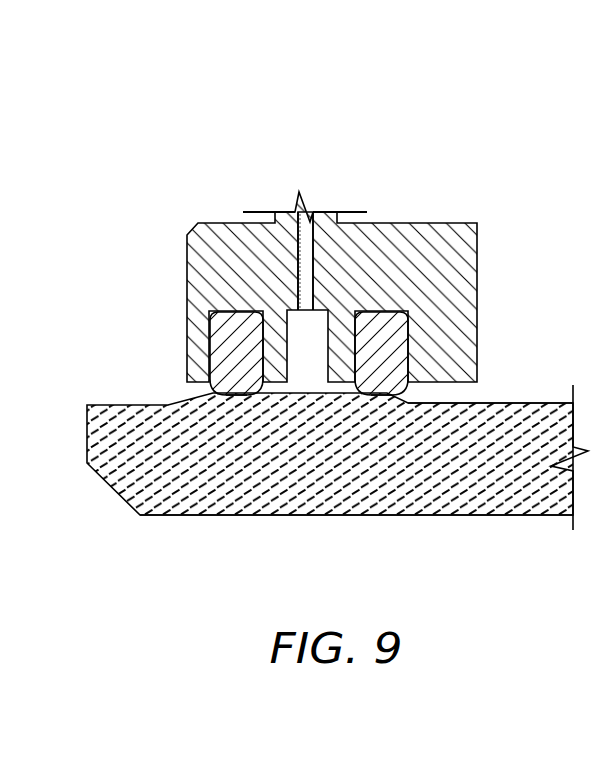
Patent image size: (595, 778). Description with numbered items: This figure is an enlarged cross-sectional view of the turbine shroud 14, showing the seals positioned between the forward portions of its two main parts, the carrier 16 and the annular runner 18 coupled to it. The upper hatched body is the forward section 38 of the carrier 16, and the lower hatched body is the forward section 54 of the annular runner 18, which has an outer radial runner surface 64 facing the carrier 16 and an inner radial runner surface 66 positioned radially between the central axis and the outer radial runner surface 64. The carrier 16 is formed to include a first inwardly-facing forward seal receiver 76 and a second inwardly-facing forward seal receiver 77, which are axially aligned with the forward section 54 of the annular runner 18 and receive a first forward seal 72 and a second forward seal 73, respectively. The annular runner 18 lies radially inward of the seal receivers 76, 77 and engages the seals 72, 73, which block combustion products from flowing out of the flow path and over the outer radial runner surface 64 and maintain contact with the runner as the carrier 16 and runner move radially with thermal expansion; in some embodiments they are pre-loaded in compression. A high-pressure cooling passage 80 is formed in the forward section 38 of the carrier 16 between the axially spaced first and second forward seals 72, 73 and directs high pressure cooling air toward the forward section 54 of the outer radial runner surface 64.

The turbine shroud 14 is at (437, 92).
The forward section of the carrier 38 is at (219, 160).
The carrier 16 is at (451, 200).
The high-pressure cooling passage 80 is at (309, 240).
The first forward seal 72 is at (218, 327).
The second forward seal 73 is at (388, 343).
The first inwardly-facing forward seal receiver 76 is at (232, 375).
The second inwardly-facing forward seal receiver 77 is at (382, 385).
The forward section of the annular runner 54 is at (95, 365).
The annular runner 18 is at (255, 535).
The outer radial runner surface 64 is at (497, 404).
The inner radial runner surface 66 is at (522, 516).